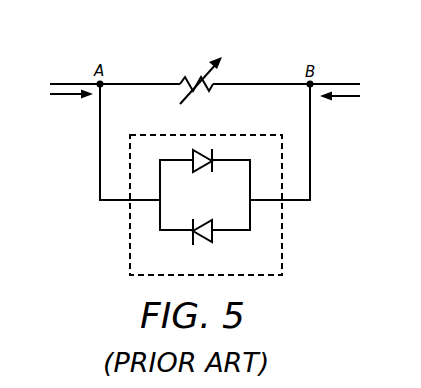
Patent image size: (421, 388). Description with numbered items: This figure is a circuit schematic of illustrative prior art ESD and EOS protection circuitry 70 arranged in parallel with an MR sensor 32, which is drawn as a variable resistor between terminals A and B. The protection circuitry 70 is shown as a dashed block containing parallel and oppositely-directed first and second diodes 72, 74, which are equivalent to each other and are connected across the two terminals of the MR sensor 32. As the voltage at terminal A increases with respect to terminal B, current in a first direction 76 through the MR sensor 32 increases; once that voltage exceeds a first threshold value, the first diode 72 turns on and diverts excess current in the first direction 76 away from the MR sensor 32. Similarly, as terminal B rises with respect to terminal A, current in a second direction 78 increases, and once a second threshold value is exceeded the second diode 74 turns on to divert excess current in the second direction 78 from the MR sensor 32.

The MR sensor 32 is at (211, 80).
The ESD and EOS protection circuitry 70 is at (282, 224).
The first diode 72 is at (196, 170).
The second diode 74 is at (207, 242).
The first direction 76 is at (69, 107).
The second direction 78 is at (340, 108).